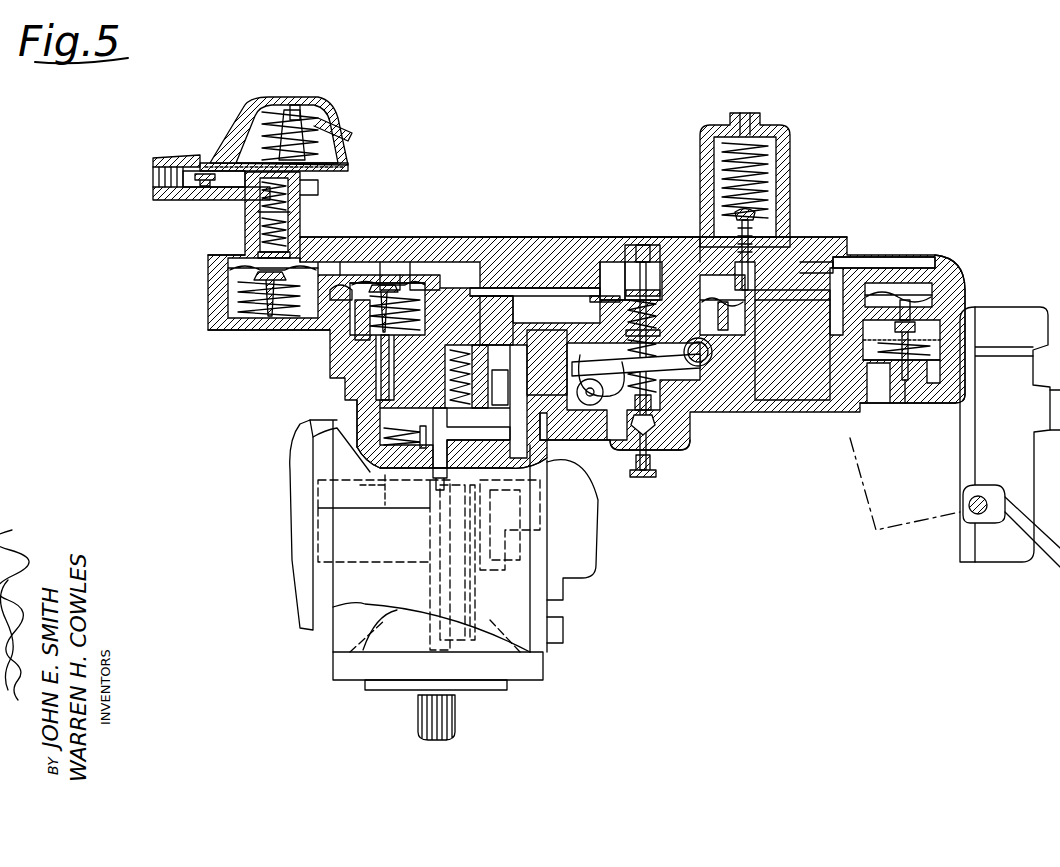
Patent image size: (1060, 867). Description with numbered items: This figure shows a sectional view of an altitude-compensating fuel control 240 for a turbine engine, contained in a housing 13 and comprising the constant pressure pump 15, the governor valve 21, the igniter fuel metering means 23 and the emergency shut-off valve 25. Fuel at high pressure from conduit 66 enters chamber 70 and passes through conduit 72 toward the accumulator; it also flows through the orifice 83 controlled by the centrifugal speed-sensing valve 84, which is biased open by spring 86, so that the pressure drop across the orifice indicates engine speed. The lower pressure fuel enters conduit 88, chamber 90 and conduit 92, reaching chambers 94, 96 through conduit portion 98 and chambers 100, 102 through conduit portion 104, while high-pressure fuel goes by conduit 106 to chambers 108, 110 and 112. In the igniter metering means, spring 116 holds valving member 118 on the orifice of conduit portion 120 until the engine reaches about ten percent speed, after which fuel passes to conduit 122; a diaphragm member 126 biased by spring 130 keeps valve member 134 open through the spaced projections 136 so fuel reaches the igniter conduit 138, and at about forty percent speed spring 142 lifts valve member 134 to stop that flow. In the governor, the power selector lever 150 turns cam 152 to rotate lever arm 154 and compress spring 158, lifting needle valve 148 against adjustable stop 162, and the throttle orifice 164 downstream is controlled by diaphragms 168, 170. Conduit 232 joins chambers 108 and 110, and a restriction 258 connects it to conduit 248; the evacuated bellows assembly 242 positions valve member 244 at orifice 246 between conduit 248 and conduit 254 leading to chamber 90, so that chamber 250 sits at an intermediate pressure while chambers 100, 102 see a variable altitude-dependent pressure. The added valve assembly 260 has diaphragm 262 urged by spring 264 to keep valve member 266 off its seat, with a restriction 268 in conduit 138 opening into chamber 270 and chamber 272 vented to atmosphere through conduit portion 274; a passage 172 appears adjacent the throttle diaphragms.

The housing 13 is at (478, 236).
The constant pressure pump 15 is at (553, 600).
The governor valve 21 is at (560, 235).
The igniter fuel metering means 23 is at (340, 344).
The emergency shut-off valve 25 is at (958, 463).
The conduit 66 is at (572, 392).
The chamber 70 is at (368, 417).
The conduit 72 is at (372, 458).
The orifice 83 is at (402, 476).
The valve 84 is at (427, 437).
The spring 86 is at (413, 447).
The conduit 88 is at (466, 372).
The chamber 90 is at (593, 335).
The conduit 92 is at (466, 334).
The chamber 94 is at (250, 327).
The chamber 96 is at (404, 352).
The conduit portion 98 is at (337, 328).
The chamber 100 is at (940, 306).
The chamber 102 is at (943, 326).
The conduit portion 104 is at (708, 343).
The conduit 106 is at (503, 297).
The chamber 108 is at (617, 270).
The chamber 110 is at (930, 283).
The chamber 112 is at (431, 270).
The spring 116 is at (383, 360).
The valving member 118 is at (360, 322).
The conduit portion 120 is at (392, 266).
The conduit 122 is at (350, 252).
The diaphragm member 126 is at (232, 288).
The spring 130 is at (262, 309).
The valve member 134 is at (307, 248).
The spaced projections 136 is at (240, 253).
The conduit 138 is at (163, 200).
The spring 142 is at (250, 225).
The needle valve 148 is at (680, 440).
The power selector lever 150 is at (1052, 560).
The cam 152 is at (530, 352).
The lever arm 154 is at (607, 308).
The spring 158 is at (724, 314).
The adjustable stop 162 is at (653, 240).
The orifice 164 is at (897, 368).
The diaphragm 168 is at (937, 288).
The diaphragm 170 is at (958, 340).
The passage 172 is at (913, 372).
The conduit 232 is at (760, 320).
The fuel control 240 is at (488, 166).
The evacuated bellows assembly 242 is at (773, 164).
The valve member 244 is at (695, 230).
The orifice 246 is at (760, 248).
The conduit 248 is at (820, 262).
The chamber 250 is at (957, 363).
The conduit 254 is at (775, 342).
The restriction 258 is at (833, 268).
The valve assembly 260 is at (313, 97).
The diaphragm 262 is at (338, 160).
The spring 264 is at (258, 128).
The valve member 266 is at (250, 198).
The restriction 268 is at (203, 165).
The chamber 270 is at (318, 190).
The chamber 272 is at (295, 122).
The conduit portion 274 is at (338, 127).